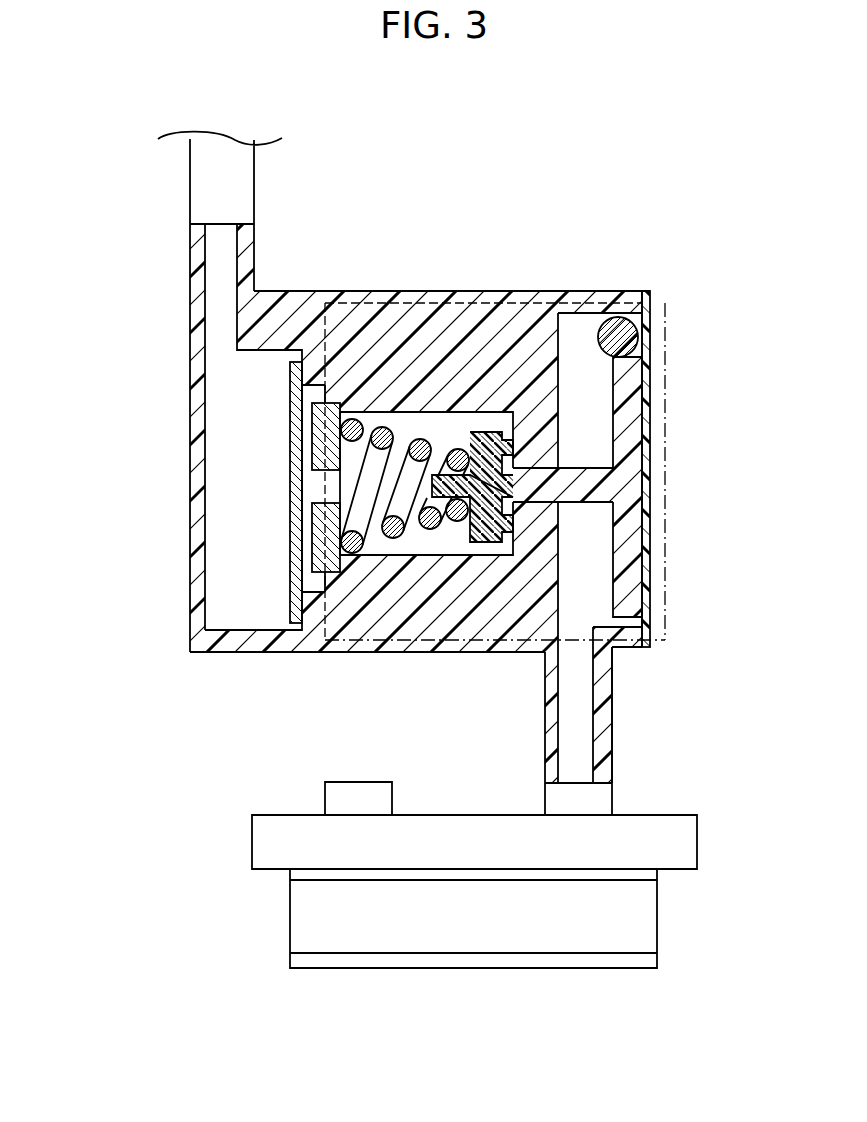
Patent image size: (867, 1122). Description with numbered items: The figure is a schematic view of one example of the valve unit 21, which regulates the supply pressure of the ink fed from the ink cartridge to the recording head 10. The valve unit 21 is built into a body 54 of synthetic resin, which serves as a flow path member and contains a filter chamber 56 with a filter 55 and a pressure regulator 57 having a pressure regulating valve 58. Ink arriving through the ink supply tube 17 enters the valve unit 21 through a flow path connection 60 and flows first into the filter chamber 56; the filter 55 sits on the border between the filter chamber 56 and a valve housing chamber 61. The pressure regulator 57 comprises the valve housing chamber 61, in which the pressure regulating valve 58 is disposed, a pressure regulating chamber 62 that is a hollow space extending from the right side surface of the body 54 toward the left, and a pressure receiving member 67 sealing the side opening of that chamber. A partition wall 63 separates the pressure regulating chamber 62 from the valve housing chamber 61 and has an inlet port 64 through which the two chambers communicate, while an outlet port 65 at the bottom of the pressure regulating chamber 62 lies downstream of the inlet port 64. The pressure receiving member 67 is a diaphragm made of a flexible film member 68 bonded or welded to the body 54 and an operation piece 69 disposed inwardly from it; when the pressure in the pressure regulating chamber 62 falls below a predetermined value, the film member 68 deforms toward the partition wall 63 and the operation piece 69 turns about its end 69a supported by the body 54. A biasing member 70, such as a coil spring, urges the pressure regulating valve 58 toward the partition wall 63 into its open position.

The recording head 10 is at (273, 925).
The ink supply tube 17 is at (205, 183).
The valve unit 21 is at (165, 431).
The body 54 is at (250, 644).
The filter 55 is at (295, 558).
The filter chamber 56 is at (228, 483).
The pressure regulator 57 is at (665, 418).
The pressure regulating valve 58 is at (462, 418).
The flow path connection 60 is at (188, 263).
The valve housing chamber 61 is at (397, 548).
The pressure regulating chamber 62 is at (573, 588).
The partition wall 63 is at (561, 431).
The inlet port 64 is at (531, 504).
The outlet port 65 is at (573, 657).
The pressure receiving member 67 is at (754, 532).
The film member 68 is at (643, 577).
The operation piece 69 is at (628, 548).
The end 69a is at (622, 338).
The biasing member 70 is at (379, 427).